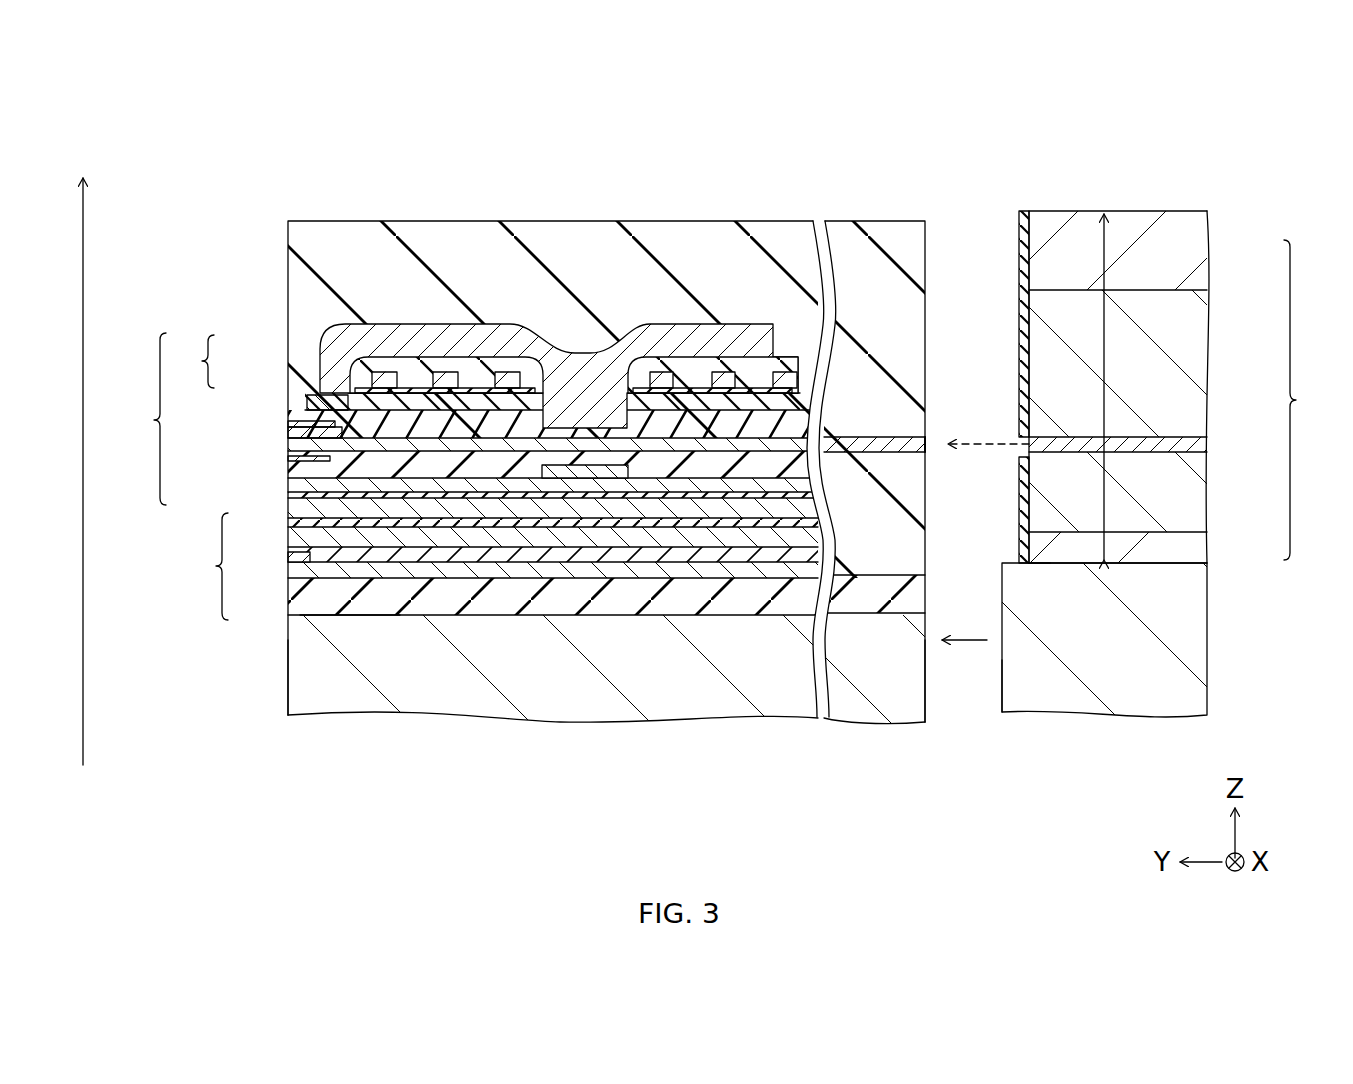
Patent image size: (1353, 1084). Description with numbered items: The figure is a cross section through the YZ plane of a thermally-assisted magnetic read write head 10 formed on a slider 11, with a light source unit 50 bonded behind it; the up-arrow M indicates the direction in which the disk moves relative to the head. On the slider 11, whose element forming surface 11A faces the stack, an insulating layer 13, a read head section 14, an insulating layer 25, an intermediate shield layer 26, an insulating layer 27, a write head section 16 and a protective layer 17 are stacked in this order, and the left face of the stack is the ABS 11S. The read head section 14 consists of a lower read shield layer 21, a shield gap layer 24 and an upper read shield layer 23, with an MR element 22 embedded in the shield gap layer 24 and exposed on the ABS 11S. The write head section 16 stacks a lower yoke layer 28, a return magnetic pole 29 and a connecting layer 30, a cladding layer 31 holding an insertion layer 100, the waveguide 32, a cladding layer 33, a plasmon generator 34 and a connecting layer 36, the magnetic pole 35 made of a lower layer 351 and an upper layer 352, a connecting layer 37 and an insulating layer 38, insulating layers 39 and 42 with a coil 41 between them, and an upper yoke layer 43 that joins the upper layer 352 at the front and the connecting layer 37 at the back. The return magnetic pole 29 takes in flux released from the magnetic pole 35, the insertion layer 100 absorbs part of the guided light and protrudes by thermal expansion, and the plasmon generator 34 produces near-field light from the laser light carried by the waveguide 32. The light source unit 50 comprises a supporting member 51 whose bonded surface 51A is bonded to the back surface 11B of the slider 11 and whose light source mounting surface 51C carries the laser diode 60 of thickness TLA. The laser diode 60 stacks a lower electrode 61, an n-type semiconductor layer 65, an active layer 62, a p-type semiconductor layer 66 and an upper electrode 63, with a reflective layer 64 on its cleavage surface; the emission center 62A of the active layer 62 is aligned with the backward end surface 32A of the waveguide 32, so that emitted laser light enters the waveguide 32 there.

The magnetic read write head 10 is at (545, 443).
The slider 11 is at (440, 698).
The element forming surface 11A is at (382, 614).
The back surface 11B is at (927, 705).
The ABS 11S is at (287, 700).
The insulating layer 13 is at (748, 596).
The read head section 14 is at (205, 566).
The write head section 16 is at (141, 419).
The protective layer 17 is at (757, 236).
The lower read shield layer 21 is at (295, 608).
The MR element 22 is at (305, 588).
The upper read shield layer 23 is at (312, 565).
The shield gap layer 24 is at (350, 545).
The insulating layer 25 is at (497, 528).
The intermediate shield layer 26 is at (542, 520).
The insulating layer 27 is at (595, 505).
The lower yoke layer 28 is at (320, 490).
The return magnetic pole 29 is at (320, 470).
The connecting layer 30 is at (548, 448).
The cladding layer 31 is at (653, 462).
The waveguide 32 is at (293, 447).
The backward end surface 32A is at (930, 440).
The cladding layer 33 is at (705, 453).
The plasmon generator 34 is at (292, 420).
The magnetic pole 35 is at (192, 361).
The lower layer 351 is at (300, 398).
The upper layer 352 is at (322, 382).
The connecting layer 36 is at (567, 468).
The connecting layer 37 is at (612, 405).
The insulating layer 38 is at (492, 378).
The insulating layer 39 is at (405, 360).
The coil 41 is at (437, 378).
The insulating layer 42 is at (462, 398).
The upper yoke layer 43 is at (345, 345).
The light source unit 50 is at (1137, 427).
The supporting member 51 is at (1190, 621).
The bonded surface 51A is at (1000, 692).
The light source mounting surface 51C is at (1032, 560).
The laser diode 60 is at (1140, 353).
The lower electrode 61 is at (1204, 548).
The active layer 62 is at (1200, 445).
The emission center 62A is at (1022, 463).
The upper electrode 63 is at (1212, 244).
The reflective layer 64 is at (1020, 240).
The n-type semiconductor layer 65 is at (1200, 495).
The p-type semiconductor layer 66 is at (1200, 363).
The insertion layer 100 is at (293, 458).
The up-arrow M is at (86, 690).
The thickness of the LD TLA is at (1107, 235).